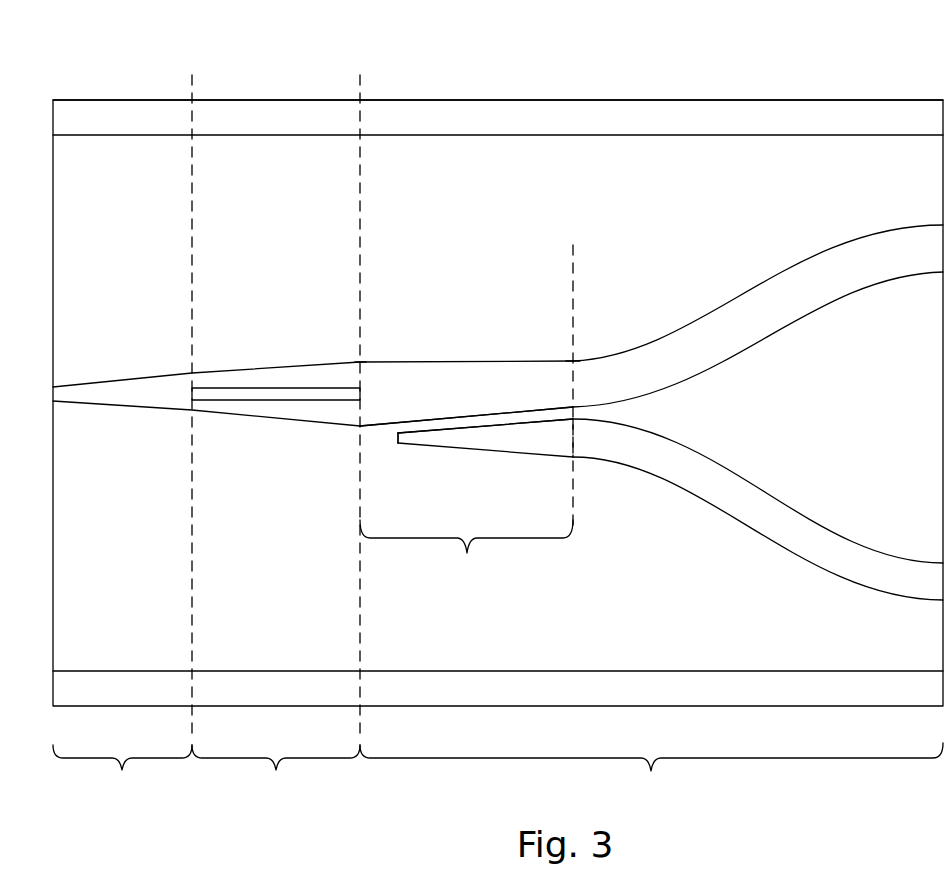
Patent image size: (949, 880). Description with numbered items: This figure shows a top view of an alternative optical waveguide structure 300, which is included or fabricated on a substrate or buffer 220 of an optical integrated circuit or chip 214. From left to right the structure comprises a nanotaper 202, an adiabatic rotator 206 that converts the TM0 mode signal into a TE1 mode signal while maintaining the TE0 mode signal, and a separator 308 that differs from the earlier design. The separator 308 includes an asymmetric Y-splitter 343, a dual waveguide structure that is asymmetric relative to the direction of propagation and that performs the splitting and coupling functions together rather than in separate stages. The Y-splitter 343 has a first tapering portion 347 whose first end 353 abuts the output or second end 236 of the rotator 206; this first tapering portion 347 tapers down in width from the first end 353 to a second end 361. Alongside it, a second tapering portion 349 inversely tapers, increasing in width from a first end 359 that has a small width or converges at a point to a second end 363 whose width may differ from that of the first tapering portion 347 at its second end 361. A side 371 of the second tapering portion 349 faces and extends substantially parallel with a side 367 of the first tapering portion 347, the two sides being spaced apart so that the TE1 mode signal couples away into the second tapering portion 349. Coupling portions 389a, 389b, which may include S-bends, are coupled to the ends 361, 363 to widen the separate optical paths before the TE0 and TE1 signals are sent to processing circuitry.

The optical waveguide structure 300 is at (555, 135).
The optical integrated circuit or chip 214 is at (698, 100).
The substrate or buffer 220 is at (840, 172).
The nanotaper 202 is at (122, 442).
The rotator 206 is at (276, 441).
The separator 308 is at (651, 774).
The second end of the rotator 236 is at (358, 377).
The asymmetric Y-splitter 343 is at (466, 417).
The first tapering portion 347 is at (472, 387).
The first end of the first tapering portion 353 is at (358, 377).
The second end of the first tapering portion 361 is at (572, 377).
The side of the first tapering portion 367 is at (447, 423).
The second tapering portion 349 is at (507, 442).
The first end of the second tapering portion 359 is at (398, 440).
The second end of the second tapering portion 363 is at (573, 437).
The side of the second tapering portion 371 is at (465, 425).
The coupling portion 389a is at (723, 333).
The coupling portion 389b is at (748, 504).